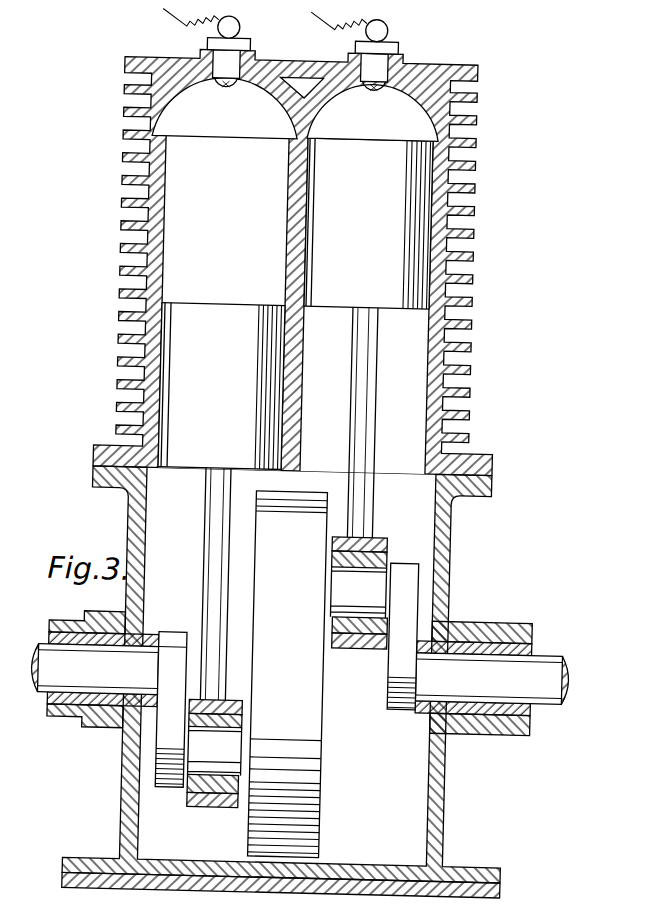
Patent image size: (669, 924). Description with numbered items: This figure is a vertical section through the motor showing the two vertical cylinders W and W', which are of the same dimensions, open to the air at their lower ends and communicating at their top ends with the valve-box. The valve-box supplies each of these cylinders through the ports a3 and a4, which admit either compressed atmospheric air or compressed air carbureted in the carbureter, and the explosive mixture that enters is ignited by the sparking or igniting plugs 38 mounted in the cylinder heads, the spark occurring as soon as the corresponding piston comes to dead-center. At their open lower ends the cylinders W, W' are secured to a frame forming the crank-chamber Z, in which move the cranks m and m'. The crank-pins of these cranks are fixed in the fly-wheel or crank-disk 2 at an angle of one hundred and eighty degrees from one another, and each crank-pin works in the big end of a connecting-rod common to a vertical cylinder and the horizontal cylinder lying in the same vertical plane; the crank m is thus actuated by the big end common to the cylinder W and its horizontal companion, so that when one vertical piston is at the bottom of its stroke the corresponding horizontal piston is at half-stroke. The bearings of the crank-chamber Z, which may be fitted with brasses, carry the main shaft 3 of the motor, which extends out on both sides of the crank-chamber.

The sparking or igniting plug 38 is at (229, 29).
The port a3 is at (225, 107).
The port a4 is at (373, 112).
The vertical cylinder W' is at (297, 261).
The vertical cylinder W is at (368, 306).
The crank-chamber Z is at (451, 556).
The crank m is at (376, 508).
The crank m' is at (201, 637).
The fly-wheel or crank-disk 2 is at (288, 674).
The main shaft 3 is at (300, 674).